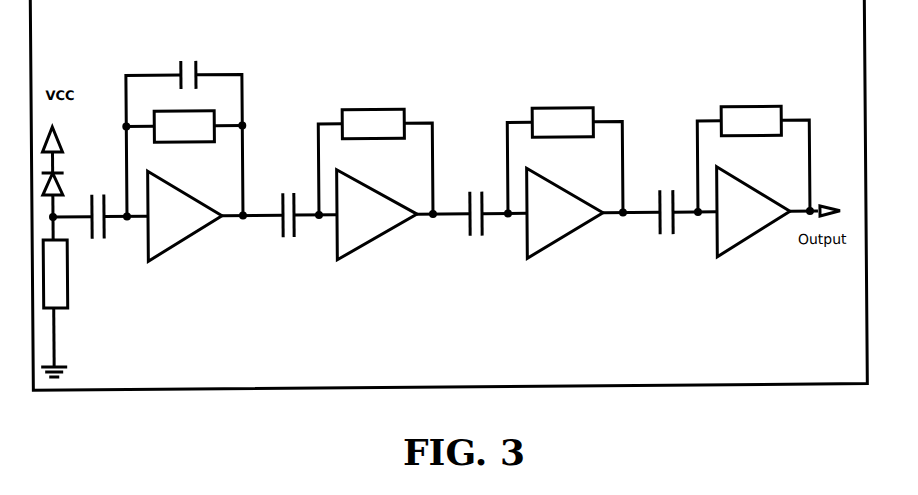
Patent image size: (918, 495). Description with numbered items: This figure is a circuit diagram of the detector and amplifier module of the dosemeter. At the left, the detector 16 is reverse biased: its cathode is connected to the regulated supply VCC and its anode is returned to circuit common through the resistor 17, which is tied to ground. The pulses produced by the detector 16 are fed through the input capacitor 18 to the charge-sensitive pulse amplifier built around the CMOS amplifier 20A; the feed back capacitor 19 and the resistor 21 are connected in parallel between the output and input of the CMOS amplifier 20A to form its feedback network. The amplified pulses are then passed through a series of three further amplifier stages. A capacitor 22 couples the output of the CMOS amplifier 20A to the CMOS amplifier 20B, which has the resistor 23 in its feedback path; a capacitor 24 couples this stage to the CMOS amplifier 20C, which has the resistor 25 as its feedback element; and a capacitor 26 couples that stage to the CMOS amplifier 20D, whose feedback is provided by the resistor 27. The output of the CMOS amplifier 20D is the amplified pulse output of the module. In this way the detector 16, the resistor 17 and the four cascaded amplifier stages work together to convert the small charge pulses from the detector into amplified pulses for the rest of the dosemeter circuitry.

The detector 16 is at (61, 174).
The resistor 17 is at (70, 274).
The input capacitor 18 is at (105, 207).
The feed back capacitor 19 is at (192, 65).
The CMOS amplifier 20A is at (185, 216).
The CMOS amplifier 20B is at (377, 214).
The CMOS amplifier 20C is at (565, 213).
The CMOS amplifier 20D is at (754, 211).
The resistor 21 is at (184, 141).
The coupling capacitor 22 is at (291, 203).
The resistor 23 is at (373, 114).
The coupling capacitor 24 is at (472, 196).
The resistor 25 is at (562, 112).
The coupling capacitor 26 is at (671, 199).
The resistor 27 is at (751, 110).